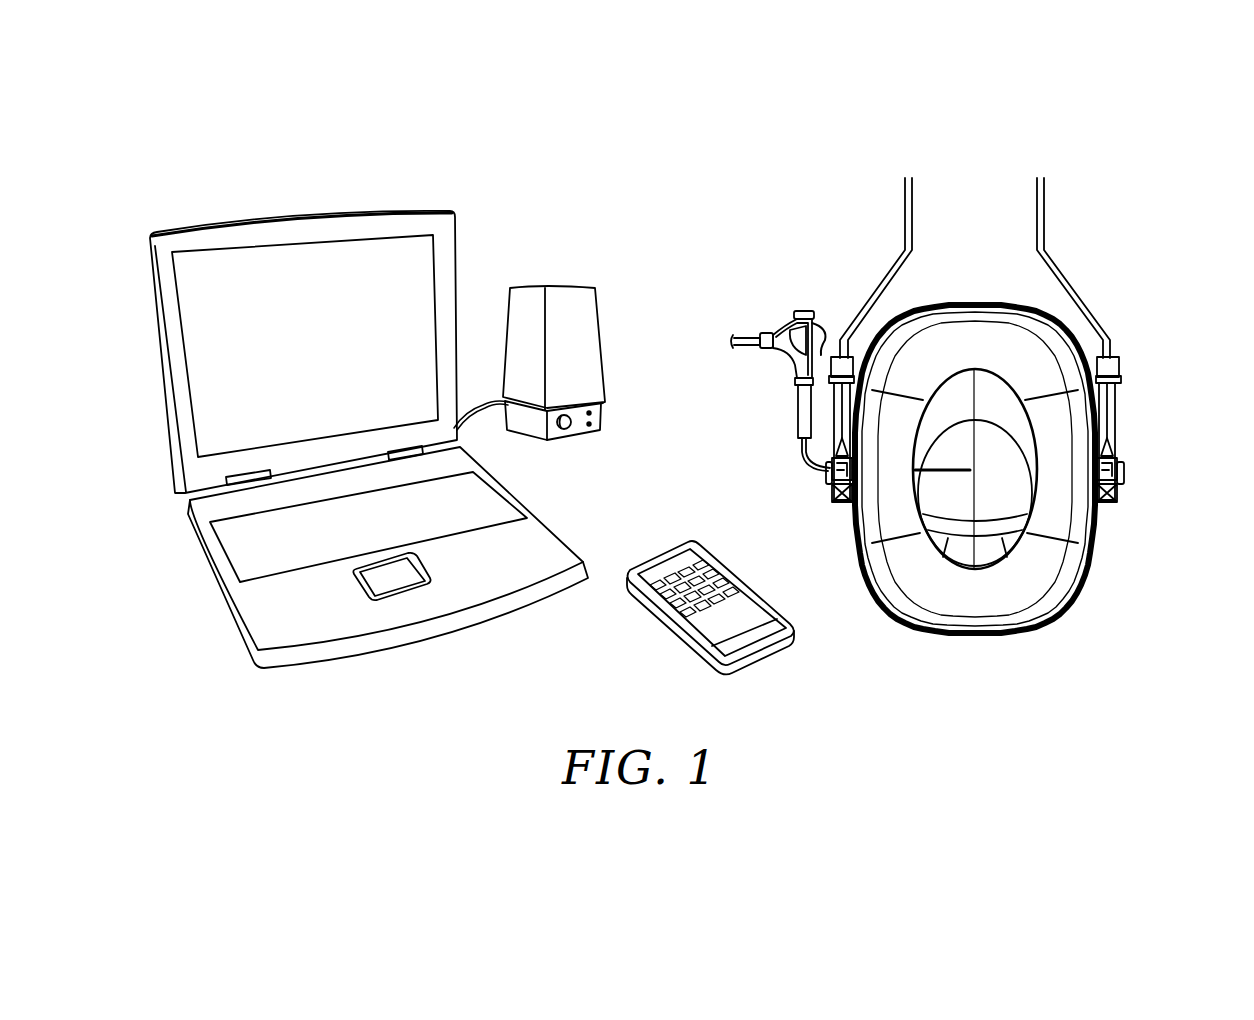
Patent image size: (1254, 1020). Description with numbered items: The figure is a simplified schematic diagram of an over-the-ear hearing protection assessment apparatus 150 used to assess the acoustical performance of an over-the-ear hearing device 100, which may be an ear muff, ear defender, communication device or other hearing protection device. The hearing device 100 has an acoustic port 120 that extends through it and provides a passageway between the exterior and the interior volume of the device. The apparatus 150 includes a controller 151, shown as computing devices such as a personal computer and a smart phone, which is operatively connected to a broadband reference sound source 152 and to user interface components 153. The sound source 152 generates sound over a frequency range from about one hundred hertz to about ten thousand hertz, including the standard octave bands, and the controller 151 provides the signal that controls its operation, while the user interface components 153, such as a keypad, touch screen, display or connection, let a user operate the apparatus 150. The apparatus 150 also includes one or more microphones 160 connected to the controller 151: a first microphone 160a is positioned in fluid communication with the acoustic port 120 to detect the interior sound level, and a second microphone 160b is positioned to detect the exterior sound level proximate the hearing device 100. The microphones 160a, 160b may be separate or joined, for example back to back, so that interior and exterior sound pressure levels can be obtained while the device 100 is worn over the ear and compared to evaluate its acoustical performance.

The over-the-ear hearing device 100 is at (1105, 238).
The acoustic port 120 is at (798, 425).
The over-the-ear hearing protection assessment apparatus 150 is at (805, 110).
The controller 151 is at (238, 205).
The broadband reference sound source 152 is at (562, 286).
The user interface components 153 is at (446, 428).
The microphones 160 is at (768, 309).
The first microphone 160a is at (797, 385).
The second microphone 160b is at (803, 311).